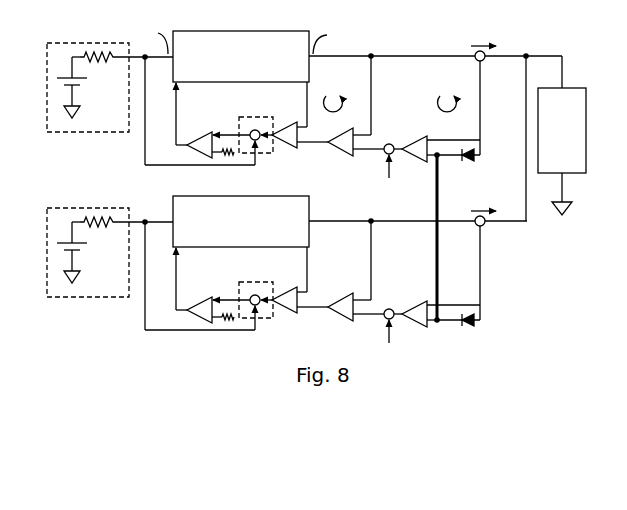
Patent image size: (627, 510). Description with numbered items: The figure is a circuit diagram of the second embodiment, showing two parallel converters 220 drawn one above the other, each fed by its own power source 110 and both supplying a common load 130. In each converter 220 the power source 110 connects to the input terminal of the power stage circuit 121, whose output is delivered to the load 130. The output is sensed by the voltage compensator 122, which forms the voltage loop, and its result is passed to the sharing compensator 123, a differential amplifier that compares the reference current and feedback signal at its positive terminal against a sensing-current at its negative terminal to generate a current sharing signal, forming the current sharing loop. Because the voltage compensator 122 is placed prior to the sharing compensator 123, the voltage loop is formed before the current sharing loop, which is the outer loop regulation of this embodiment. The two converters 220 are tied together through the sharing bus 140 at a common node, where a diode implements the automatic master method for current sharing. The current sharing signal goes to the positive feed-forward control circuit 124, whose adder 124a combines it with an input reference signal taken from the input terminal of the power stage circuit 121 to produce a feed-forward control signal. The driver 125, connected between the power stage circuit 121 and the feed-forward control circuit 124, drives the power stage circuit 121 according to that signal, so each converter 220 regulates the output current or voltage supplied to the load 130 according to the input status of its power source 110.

The power source 110 is at (93, 133).
The power stage circuit 121 is at (258, 31).
The voltage compensator 122 is at (355, 157).
The sharing compensator 123 is at (413, 164).
The positive feed-forward control circuit 124 is at (263, 154).
The adder 124a is at (253, 117).
The driver 125 is at (208, 131).
The load 130 is at (575, 87).
The sharing bus 140 is at (441, 178).
The converter 220 is at (412, 36).